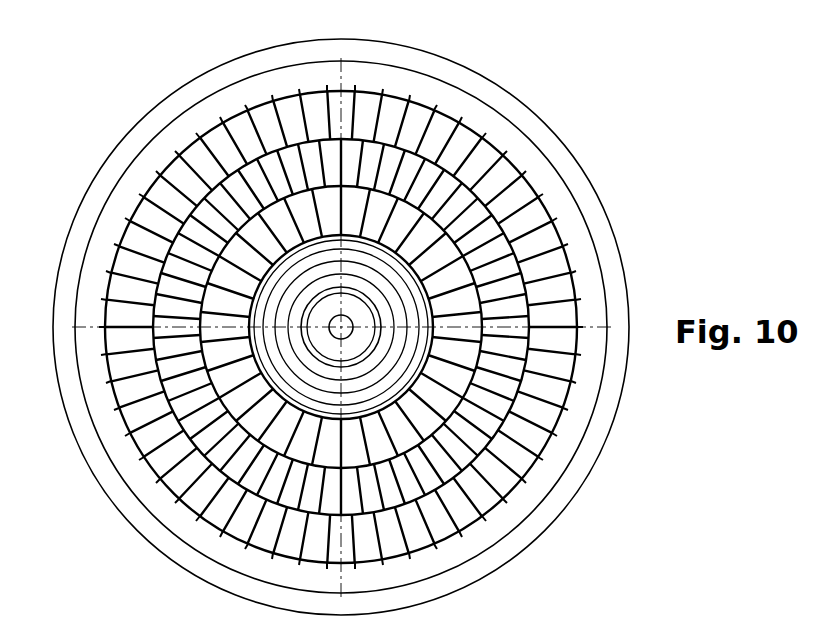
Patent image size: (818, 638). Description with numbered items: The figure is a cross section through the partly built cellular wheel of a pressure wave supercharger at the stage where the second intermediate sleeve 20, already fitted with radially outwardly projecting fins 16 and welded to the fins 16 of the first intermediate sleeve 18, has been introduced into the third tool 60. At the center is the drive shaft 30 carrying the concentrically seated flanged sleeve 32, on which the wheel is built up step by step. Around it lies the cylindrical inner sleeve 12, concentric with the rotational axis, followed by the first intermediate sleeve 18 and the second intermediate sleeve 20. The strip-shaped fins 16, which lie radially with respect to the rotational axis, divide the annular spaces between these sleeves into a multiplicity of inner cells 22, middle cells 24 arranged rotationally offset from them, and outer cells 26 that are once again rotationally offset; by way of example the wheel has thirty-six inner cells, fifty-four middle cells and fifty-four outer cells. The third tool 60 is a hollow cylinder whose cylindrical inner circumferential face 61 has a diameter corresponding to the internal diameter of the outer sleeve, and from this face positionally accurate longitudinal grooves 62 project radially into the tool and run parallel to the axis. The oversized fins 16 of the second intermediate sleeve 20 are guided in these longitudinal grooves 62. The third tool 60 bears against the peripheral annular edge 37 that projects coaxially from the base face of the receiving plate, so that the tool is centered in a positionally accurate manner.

The inner sleeve 12 is at (432, 172).
The fins 16 is at (143, 233).
The first intermediate sleeve 18 is at (502, 195).
The second intermediate sleeve 20 is at (453, 187).
The inner cells 22 is at (450, 382).
The middle cells 24 is at (495, 440).
The outer cells 26 is at (520, 458).
The drive shaft 30 is at (330, 342).
The flanged sleeve 32 is at (565, 236).
The annular edge 37 is at (167, 100).
The third tool 60 is at (113, 212).
The inner circumferential face 61 is at (117, 400).
The longitudinal grooves 62 is at (127, 222).